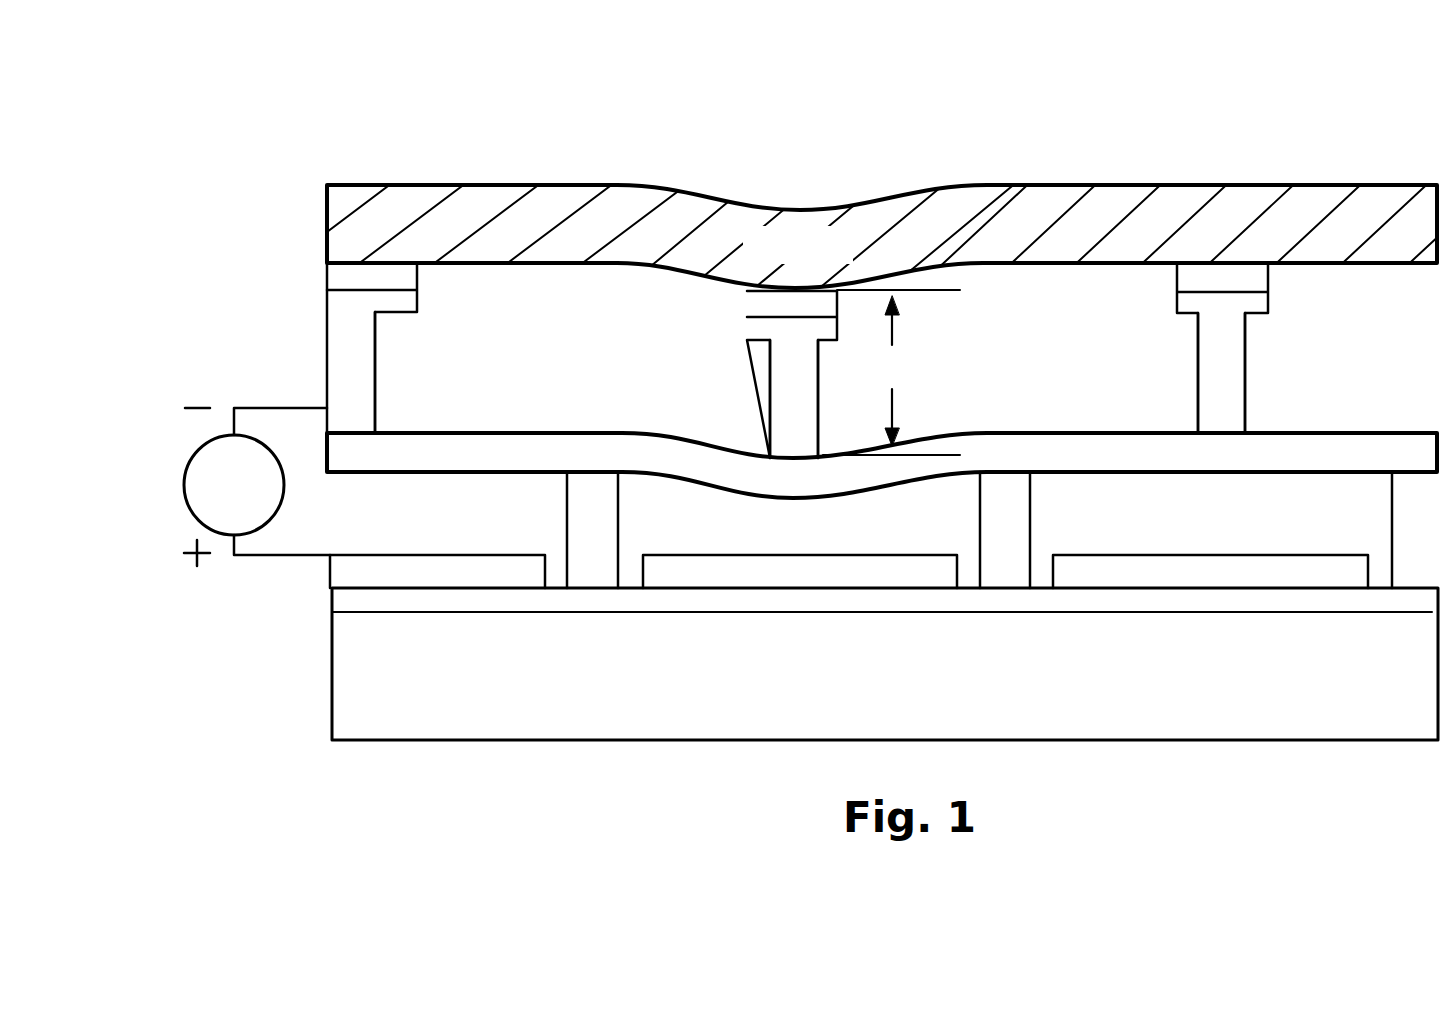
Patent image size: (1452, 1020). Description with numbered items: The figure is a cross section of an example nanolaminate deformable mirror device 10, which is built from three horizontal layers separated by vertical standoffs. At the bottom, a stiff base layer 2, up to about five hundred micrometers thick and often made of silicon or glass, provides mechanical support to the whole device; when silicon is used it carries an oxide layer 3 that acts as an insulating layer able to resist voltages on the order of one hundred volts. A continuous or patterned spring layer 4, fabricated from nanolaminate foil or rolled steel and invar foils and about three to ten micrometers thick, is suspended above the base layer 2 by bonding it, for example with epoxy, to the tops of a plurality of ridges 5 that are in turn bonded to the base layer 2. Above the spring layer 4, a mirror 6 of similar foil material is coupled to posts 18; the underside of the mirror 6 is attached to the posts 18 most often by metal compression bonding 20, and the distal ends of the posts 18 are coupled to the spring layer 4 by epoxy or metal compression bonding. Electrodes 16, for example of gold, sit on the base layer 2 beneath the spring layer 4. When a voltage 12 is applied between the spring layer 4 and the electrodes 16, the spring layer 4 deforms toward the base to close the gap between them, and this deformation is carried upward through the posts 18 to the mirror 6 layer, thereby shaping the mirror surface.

The base layer 2 is at (612, 707).
The oxide layer 3 is at (1200, 602).
The spring layer 4 is at (555, 452).
The ridges 5 is at (601, 543).
The mirror 6 is at (588, 185).
The mirror device 10 is at (347, 120).
The voltage 12 is at (187, 468).
The electrodes 16 is at (444, 560).
The posts 18 is at (367, 377).
The metal compression bonding 20 is at (340, 278).